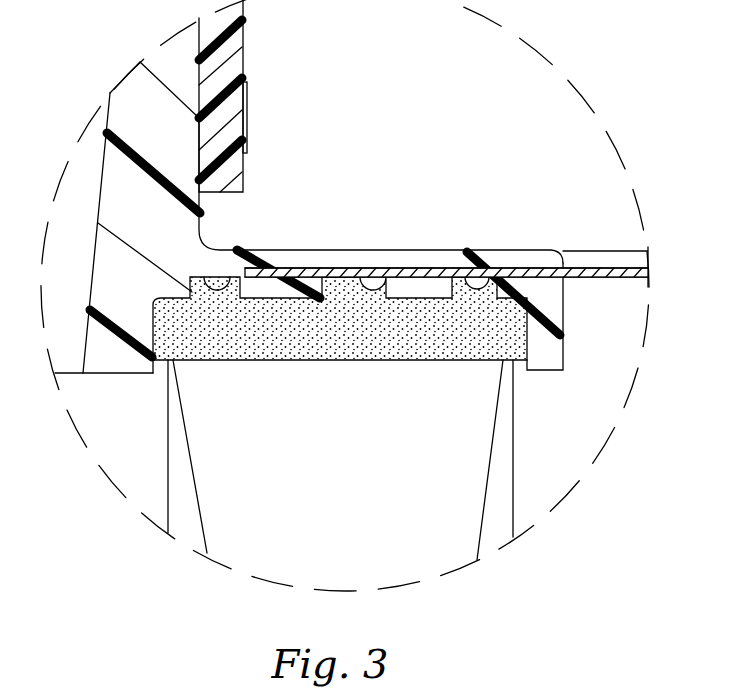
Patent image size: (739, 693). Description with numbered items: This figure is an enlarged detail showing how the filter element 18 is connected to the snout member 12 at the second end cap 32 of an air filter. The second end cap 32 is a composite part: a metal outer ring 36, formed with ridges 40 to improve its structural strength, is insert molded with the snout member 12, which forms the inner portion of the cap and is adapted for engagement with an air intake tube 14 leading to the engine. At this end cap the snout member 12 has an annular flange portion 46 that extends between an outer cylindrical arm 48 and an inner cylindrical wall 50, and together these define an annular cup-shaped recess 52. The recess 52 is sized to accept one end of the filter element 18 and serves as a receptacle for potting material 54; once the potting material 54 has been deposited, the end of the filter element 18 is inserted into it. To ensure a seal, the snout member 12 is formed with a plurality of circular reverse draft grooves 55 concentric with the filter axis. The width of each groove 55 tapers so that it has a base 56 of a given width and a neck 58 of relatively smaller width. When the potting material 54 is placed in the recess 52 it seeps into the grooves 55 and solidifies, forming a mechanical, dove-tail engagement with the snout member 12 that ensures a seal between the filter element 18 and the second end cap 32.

The snout member 12 is at (173, 152).
The air intake tube 14 is at (228, 50).
The filter element 18 is at (440, 525).
The second end cap 32 is at (520, 238).
The outer ring 36 is at (585, 258).
The ridges 40 is at (405, 272).
The annular flange portion 46 is at (355, 260).
The outer cylindrical arm 48 is at (555, 340).
The inner cylindrical wall 50 is at (108, 360).
The cup-shaped recess 52 is at (388, 386).
The potting material 54 is at (273, 347).
The reverse draft grooves 55 is at (230, 286).
The base 56 is at (340, 273).
The neck 58 is at (323, 293).